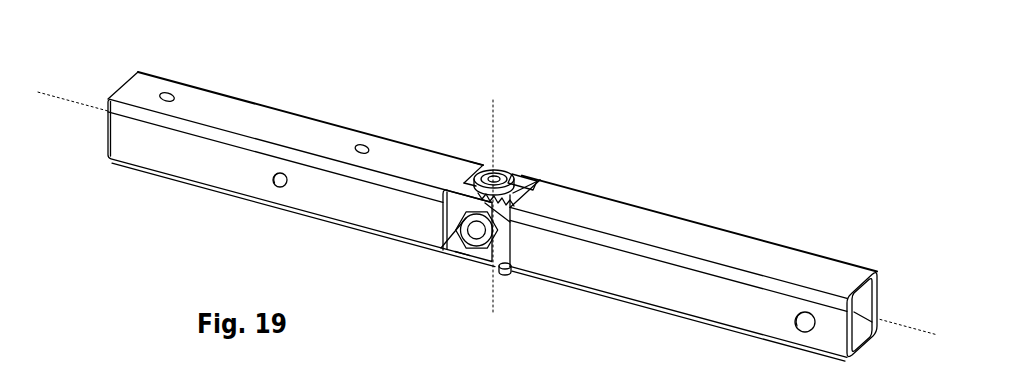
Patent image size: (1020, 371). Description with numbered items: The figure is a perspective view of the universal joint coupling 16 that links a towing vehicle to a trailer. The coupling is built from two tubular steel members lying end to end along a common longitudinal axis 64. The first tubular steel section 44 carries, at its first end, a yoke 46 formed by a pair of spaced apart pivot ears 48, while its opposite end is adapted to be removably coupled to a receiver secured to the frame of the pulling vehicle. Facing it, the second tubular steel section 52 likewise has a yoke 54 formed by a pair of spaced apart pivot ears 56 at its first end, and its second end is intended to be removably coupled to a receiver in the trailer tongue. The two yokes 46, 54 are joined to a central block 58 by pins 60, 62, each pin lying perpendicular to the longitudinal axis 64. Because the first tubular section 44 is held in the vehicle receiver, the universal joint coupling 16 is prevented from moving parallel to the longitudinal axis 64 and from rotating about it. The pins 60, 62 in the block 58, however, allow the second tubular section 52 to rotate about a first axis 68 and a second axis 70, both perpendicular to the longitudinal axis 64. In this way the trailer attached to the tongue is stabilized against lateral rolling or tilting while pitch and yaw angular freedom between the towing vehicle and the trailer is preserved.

The universal joint coupling 16 is at (487, 193).
The first tubular steel section 44 is at (693, 266).
The yoke 46 is at (544, 263).
The pivot ears 48 is at (563, 242).
The second tubular steel section 52 is at (301, 160).
The yoke 54 is at (433, 142).
The pivot ears 56 is at (425, 195).
The block 58 is at (421, 231).
The pin 60 is at (454, 284).
The pin 62 is at (544, 144).
The longitudinal axis 64 is at (487, 179).
The first axis 68 is at (573, 187).
The second axis 70 is at (548, 176).